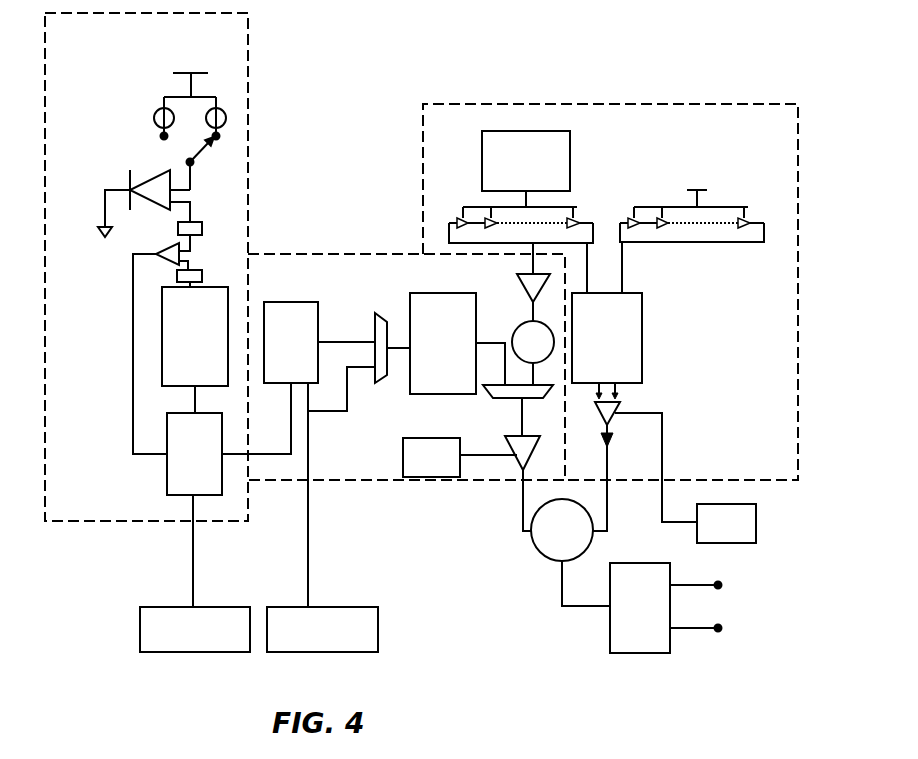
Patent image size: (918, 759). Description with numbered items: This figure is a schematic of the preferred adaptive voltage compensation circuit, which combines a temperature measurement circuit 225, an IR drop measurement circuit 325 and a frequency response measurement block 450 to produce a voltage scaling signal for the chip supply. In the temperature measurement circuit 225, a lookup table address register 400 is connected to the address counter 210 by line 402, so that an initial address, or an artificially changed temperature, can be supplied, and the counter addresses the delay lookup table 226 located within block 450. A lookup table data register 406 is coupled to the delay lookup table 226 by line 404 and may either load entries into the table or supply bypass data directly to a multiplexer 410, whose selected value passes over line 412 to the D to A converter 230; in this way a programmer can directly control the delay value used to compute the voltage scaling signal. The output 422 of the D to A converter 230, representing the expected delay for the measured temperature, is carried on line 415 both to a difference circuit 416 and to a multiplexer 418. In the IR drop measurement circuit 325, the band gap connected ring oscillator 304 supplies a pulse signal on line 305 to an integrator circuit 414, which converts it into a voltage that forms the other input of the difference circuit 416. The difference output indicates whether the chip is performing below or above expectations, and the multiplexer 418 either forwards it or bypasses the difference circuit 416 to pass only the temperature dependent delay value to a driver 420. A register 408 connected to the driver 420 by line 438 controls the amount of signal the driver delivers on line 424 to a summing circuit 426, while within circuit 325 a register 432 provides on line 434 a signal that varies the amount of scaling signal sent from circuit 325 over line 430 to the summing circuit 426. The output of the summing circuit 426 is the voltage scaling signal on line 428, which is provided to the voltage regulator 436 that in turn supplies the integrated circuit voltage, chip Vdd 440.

The temperature measurement circuit 225 is at (168, 267).
The address counter 210 is at (194, 454).
The block 450 is at (406, 367).
The delay lookup table 226 is at (291, 342).
The D to A converter 230 is at (443, 343).
The IR drop measurement circuit 325 is at (610, 292).
The band gap connected ring oscillator 304 is at (449, 228).
The line 305 is at (532, 270).
The lookup table address register 400 is at (140, 640).
The line 402 is at (193, 577).
The data register connection line 404 is at (308, 577).
The lookup table data register 406 is at (378, 643).
The register 408 is at (402, 445).
The multiplexer 410 is at (383, 377).
The multiplexer output line 412 is at (413, 307).
The integrator circuit 414 is at (517, 283).
The line 415 is at (491, 343).
The difference circuit 416 is at (516, 326).
The multiplexer 418 is at (500, 400).
The driver 420 is at (529, 441).
The D to A converter output 422 is at (418, 397).
The line 424 is at (522, 510).
The summing circuit 426 is at (542, 553).
The line 428 is at (558, 598).
The adder second input line 430 is at (608, 513).
The register 432 is at (760, 513).
The line 434 is at (718, 492).
The voltage regulator 436 is at (640, 608).
The line 438 is at (482, 456).
The integrated circuit voltage (chip Vdd) 440 is at (732, 583).